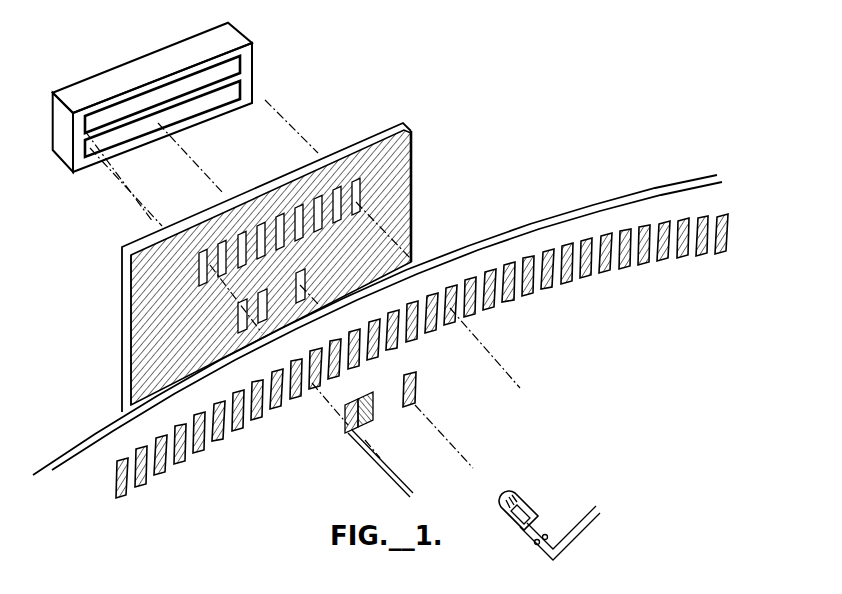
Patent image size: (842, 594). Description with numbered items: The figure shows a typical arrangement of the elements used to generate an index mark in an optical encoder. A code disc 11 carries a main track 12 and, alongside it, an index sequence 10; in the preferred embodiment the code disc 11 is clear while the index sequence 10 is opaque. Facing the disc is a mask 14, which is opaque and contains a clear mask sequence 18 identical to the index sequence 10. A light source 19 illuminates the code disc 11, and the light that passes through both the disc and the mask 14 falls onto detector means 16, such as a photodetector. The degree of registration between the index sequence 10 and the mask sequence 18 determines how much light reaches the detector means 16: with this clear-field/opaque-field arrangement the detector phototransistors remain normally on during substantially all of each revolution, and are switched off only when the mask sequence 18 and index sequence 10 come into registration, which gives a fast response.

The index sequence 10 is at (424, 394).
The code disc 11 is at (560, 211).
The main track 12 is at (580, 289).
The mask 14 is at (406, 125).
The detector means 16 is at (243, 41).
The mask sequence 18 is at (237, 327).
The light source 19 is at (528, 506).